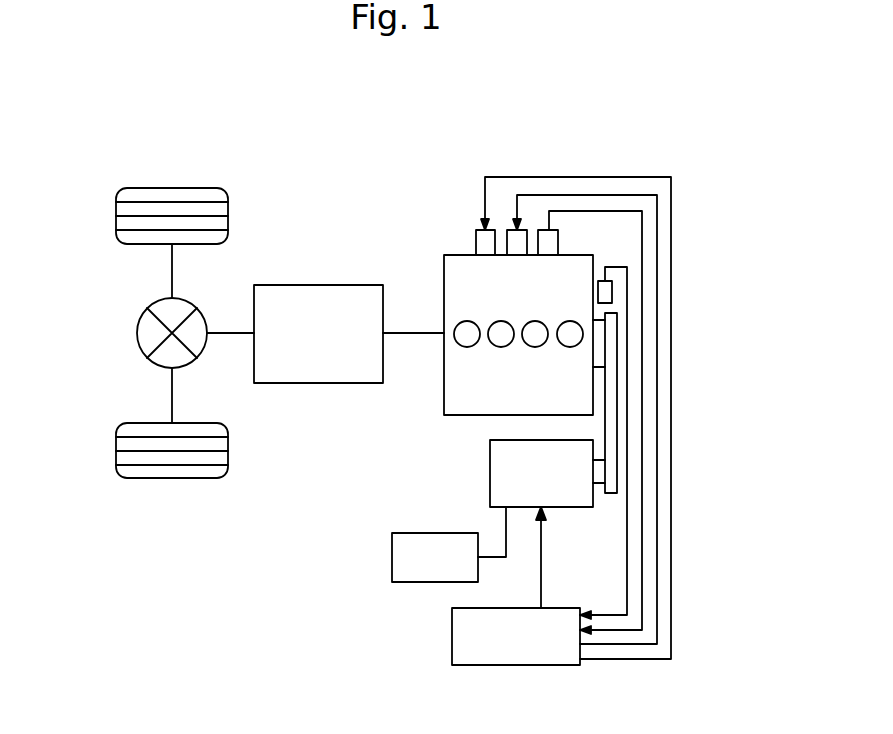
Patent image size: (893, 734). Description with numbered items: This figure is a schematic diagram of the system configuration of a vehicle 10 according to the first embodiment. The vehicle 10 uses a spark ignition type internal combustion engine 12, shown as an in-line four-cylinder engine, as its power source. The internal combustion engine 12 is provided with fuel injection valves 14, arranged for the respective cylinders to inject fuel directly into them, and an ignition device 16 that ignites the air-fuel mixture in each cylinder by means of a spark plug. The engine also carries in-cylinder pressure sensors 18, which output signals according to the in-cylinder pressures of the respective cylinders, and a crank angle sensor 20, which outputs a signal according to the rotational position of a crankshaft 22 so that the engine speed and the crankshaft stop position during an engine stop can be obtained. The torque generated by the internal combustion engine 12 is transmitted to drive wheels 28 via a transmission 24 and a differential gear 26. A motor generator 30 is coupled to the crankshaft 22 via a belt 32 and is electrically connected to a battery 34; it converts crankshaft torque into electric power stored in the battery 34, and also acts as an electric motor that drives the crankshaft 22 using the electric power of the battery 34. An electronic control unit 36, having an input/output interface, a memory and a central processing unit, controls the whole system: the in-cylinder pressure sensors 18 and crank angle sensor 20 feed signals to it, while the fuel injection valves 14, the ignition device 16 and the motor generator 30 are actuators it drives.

The vehicle 10 is at (664, 162).
The internal combustion engine 12 is at (441, 250).
The fuel injection valves 14 is at (473, 225).
The ignition device 16 is at (503, 228).
The in-cylinder pressure sensors 18 is at (558, 238).
The crank angle sensor 20 is at (612, 290).
The crankshaft 22 is at (598, 345).
The transmission 24 is at (326, 283).
The differential gear 26 is at (137, 333).
The drive wheels 28 is at (116, 218).
The motor generator 30 is at (490, 467).
The belt 32 is at (612, 428).
The battery 34 is at (392, 556).
The electronic control unit 36 is at (452, 641).